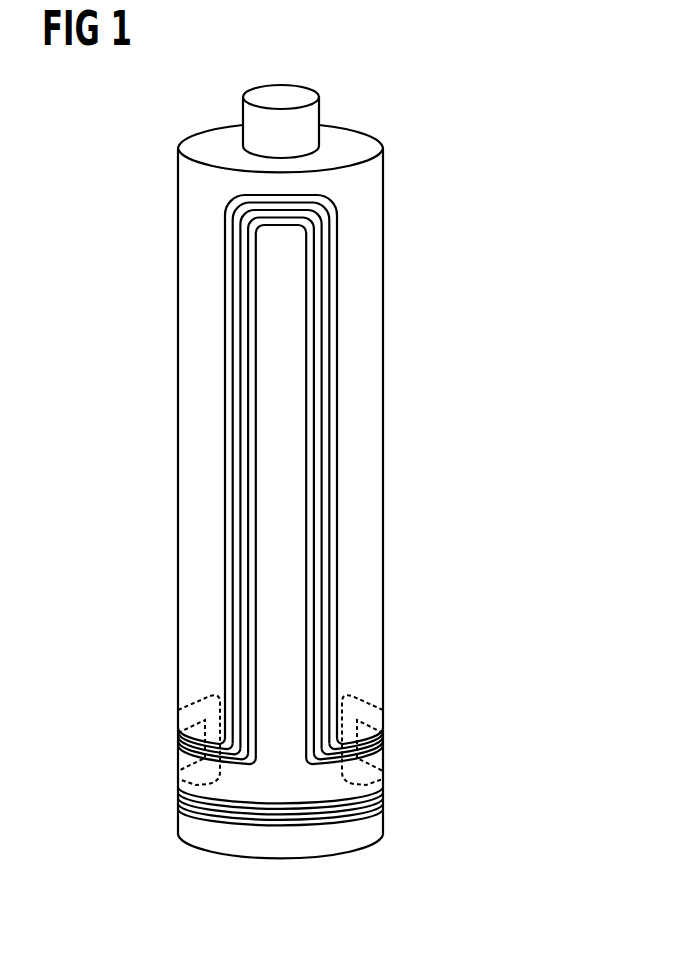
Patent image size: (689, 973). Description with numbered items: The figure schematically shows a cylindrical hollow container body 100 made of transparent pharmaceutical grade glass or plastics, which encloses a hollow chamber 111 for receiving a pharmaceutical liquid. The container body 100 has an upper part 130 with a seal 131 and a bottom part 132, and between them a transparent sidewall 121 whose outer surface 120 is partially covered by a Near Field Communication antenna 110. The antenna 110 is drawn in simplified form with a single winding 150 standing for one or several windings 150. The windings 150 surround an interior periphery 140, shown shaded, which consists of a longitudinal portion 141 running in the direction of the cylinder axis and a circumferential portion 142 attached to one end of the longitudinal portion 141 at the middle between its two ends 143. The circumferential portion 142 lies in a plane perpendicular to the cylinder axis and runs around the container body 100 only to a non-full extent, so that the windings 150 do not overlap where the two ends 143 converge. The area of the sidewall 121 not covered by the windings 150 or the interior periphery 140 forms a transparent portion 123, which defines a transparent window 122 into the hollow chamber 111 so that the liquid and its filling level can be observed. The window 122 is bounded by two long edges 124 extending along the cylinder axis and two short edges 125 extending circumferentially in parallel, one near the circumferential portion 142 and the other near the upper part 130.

The cylindrical hollow container body 100 is at (472, 337).
The Near Field Communication (NFC) antenna 110 is at (348, 620).
The hollow chamber 111 is at (190, 535).
The outer surface 120 is at (207, 222).
The sidewall 121 is at (385, 400).
The transparent window 122 is at (372, 457).
The transparent portion 123 is at (190, 340).
The long edges 124 is at (223, 283).
The short edges 125 is at (363, 167).
The upper part 130 is at (353, 142).
The seal 131 is at (288, 97).
The bottom part 132 is at (363, 852).
The interior periphery 140 is at (268, 683).
The longitudinal portion 141 is at (292, 512).
The circumferential portion 142 is at (278, 788).
The ends 143 is at (367, 712).
The windings 150 is at (223, 473).